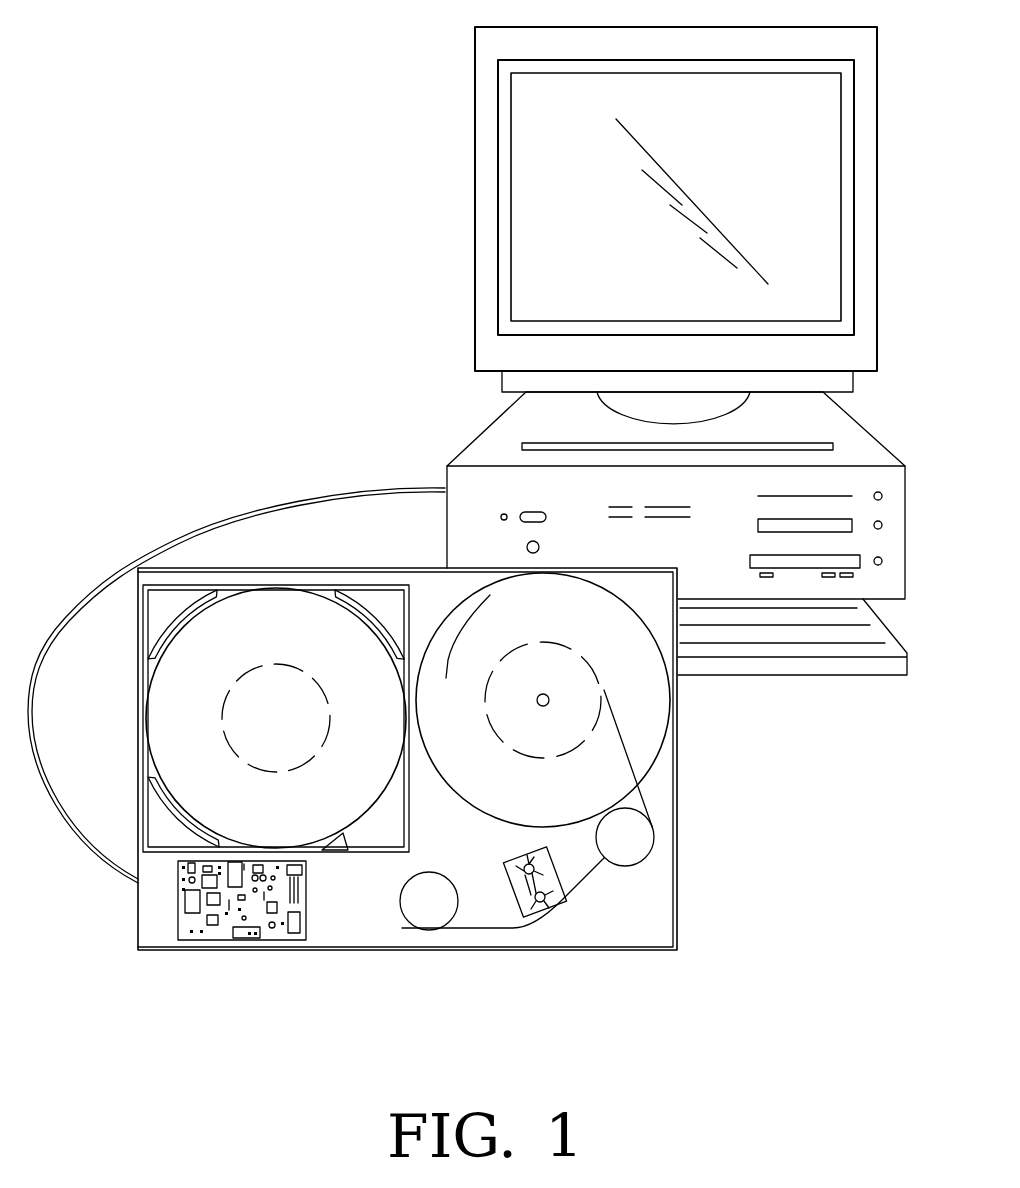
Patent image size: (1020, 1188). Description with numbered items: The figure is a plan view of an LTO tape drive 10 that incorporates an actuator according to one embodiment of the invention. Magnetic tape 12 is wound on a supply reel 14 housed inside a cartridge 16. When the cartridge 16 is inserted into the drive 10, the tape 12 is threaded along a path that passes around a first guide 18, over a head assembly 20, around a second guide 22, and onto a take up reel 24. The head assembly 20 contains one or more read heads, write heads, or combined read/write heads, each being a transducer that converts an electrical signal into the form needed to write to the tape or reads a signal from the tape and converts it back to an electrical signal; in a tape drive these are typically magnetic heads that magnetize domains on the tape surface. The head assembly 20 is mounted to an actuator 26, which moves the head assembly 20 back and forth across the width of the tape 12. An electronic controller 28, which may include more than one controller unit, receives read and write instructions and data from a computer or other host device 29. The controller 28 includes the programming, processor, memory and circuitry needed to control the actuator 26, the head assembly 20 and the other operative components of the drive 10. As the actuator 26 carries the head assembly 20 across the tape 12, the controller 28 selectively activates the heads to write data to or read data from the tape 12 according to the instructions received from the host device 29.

The LTO drive 10 is at (240, 1047).
The magnetic tape 12 is at (592, 895).
The supply reel 14 is at (282, 605).
The cartridge 16 is at (360, 587).
The guide 18 is at (411, 913).
The head assembly 20 is at (547, 916).
The guide 22 is at (646, 835).
The take up reel 24 is at (657, 715).
The actuator 26 is at (497, 847).
The electronic controller 28 is at (304, 904).
The host device 29 is at (487, 447).